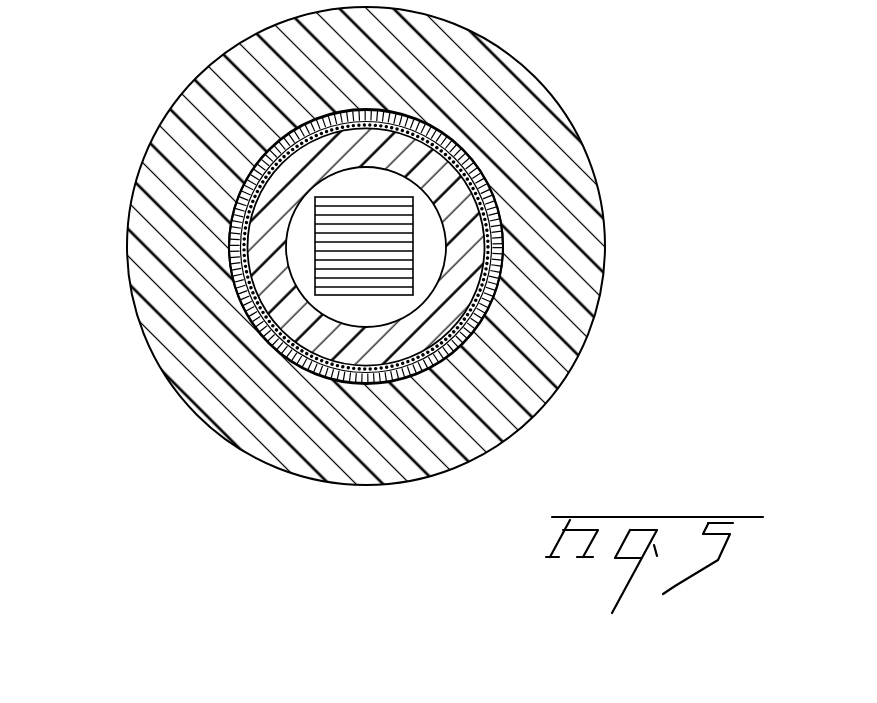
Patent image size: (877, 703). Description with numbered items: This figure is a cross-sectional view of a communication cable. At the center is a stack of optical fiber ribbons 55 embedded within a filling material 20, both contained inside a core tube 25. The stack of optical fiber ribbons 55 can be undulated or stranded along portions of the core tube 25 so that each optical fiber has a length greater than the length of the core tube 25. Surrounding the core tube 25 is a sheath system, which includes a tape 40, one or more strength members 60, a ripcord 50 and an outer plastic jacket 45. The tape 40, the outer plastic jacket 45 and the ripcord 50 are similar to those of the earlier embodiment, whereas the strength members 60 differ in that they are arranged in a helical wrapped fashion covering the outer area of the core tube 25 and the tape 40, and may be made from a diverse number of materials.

The filling material 20 is at (428, 233).
The core tube 25 is at (487, 270).
The tape 40 is at (483, 303).
The outer plastic jacket 45 is at (185, 146).
The ripcord 50 is at (240, 225).
The stack of optical fiber ribbons 55 is at (457, 170).
The strength members 60 is at (232, 266).